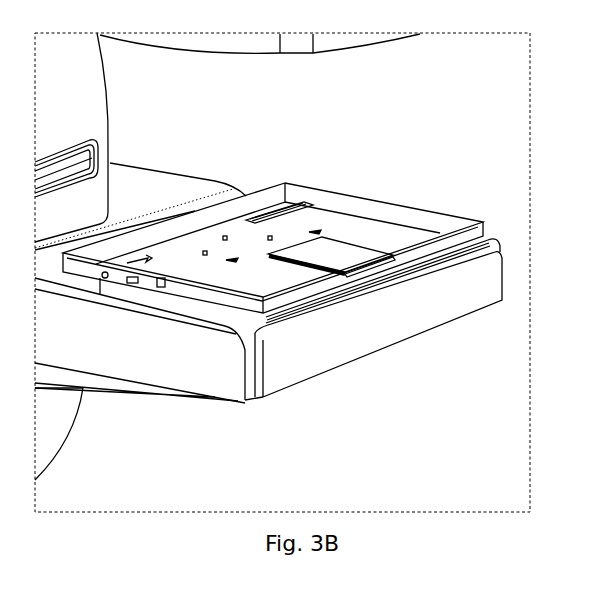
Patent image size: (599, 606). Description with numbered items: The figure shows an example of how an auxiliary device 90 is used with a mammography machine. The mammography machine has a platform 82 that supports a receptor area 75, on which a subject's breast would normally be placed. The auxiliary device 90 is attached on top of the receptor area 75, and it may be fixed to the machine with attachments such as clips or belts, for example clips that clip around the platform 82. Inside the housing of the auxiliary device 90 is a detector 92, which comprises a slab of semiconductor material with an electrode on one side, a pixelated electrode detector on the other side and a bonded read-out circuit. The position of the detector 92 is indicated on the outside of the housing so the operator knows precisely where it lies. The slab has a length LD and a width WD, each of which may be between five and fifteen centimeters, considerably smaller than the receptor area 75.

The auxiliary device 90 is at (453, 207).
The detector 92 is at (336, 254).
The receptor area 75 is at (497, 243).
The platform 82 is at (487, 289).
The width of the slab of semiconductor material WD is at (268, 256).
The length of the slab of semiconductor material LD is at (375, 260).